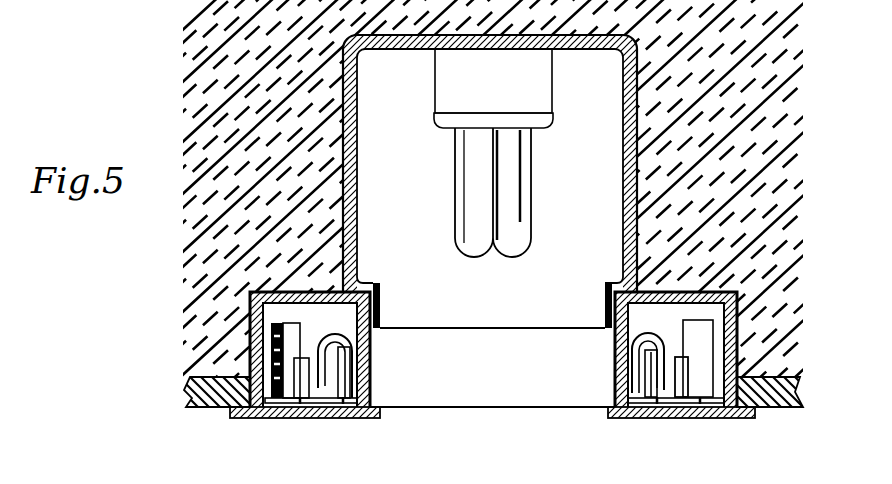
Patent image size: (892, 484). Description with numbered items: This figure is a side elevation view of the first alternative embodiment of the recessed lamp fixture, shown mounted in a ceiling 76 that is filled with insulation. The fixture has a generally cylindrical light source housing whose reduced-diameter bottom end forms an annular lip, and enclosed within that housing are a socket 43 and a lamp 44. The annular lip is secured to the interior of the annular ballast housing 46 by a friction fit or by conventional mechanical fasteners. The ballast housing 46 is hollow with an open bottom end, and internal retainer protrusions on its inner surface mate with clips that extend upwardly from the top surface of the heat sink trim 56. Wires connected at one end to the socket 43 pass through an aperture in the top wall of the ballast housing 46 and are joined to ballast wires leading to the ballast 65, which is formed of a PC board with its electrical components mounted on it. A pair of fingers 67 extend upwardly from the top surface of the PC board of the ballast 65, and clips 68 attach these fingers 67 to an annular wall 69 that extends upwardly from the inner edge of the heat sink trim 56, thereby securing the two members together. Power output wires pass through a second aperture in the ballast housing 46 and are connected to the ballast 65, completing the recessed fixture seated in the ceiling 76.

The socket 43 is at (507, 88).
The lamp 44 is at (508, 177).
The ballast housing 46 is at (250, 305).
The heat sink trim 56 is at (633, 418).
The ballast 65 is at (318, 410).
The fingers 67 is at (340, 385).
The clips 68 is at (640, 334).
The annular wall 69 is at (352, 357).
The ceiling 76 is at (772, 400).